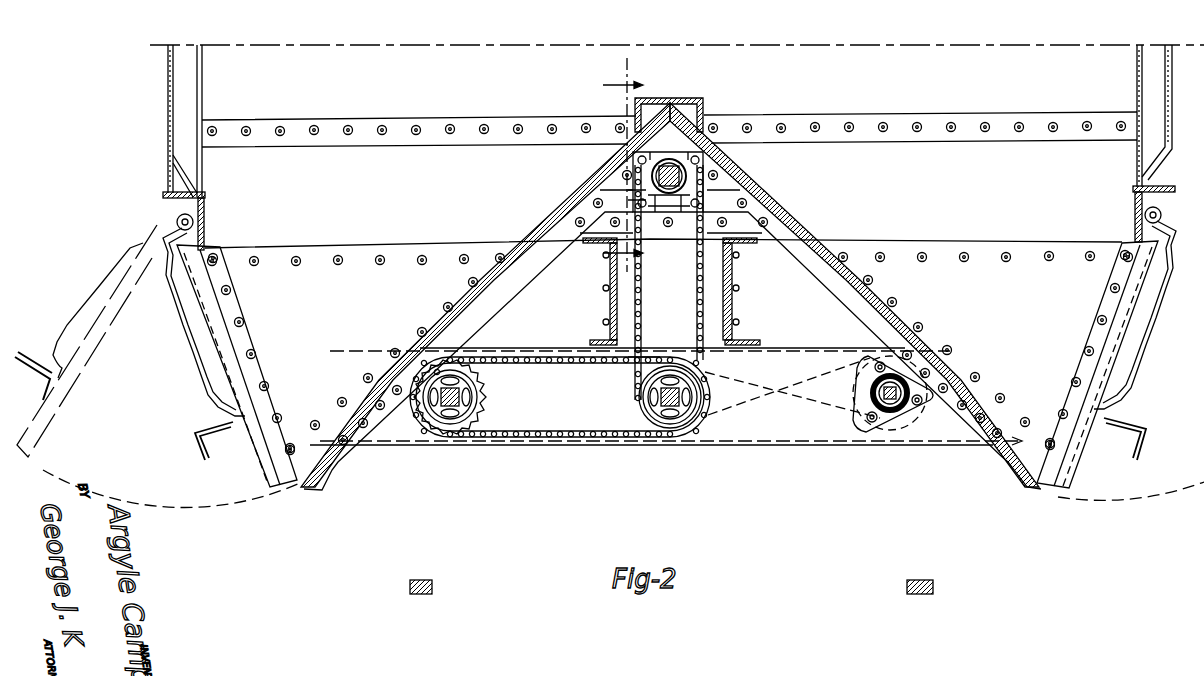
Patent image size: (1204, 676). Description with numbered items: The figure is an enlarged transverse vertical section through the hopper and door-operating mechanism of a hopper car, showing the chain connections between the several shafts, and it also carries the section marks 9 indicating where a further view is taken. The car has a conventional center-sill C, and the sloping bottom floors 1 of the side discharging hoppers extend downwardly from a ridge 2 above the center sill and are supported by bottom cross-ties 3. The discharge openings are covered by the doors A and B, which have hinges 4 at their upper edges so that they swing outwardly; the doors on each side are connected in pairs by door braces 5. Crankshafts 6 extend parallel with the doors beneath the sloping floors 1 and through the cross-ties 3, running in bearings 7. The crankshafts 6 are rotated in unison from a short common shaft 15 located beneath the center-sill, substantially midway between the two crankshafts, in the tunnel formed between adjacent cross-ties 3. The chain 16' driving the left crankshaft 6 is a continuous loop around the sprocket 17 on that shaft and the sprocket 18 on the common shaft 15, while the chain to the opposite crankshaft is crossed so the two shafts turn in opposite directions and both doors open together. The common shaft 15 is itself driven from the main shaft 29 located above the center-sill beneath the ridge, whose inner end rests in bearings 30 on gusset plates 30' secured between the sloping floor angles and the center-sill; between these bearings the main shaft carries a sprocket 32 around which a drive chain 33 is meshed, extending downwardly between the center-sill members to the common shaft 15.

The sloping bottom floors 1 is at (583, 211).
The ridge 2 is at (681, 110).
The bottom cross-ties 3 is at (821, 447).
The hinges 4 is at (173, 297).
The door braces 5 is at (207, 447).
The crankshafts 6 is at (484, 410).
The bearings 7 is at (895, 417).
The section line 9- 9 is at (623, 171).
The common shaft 15 is at (668, 416).
The chain 16' is at (560, 418).
The sprocket 17 is at (484, 396).
The sprocket 18 is at (636, 376).
The main shaft 29 is at (700, 172).
The bearings 30 is at (668, 228).
The gusset plates 30' is at (609, 184).
The sprocket 32 is at (705, 193).
The drive chain 33 is at (698, 320).
The side discharge door A is at (197, 357).
The side discharge door B is at (1146, 350).
The center-sill C is at (724, 320).